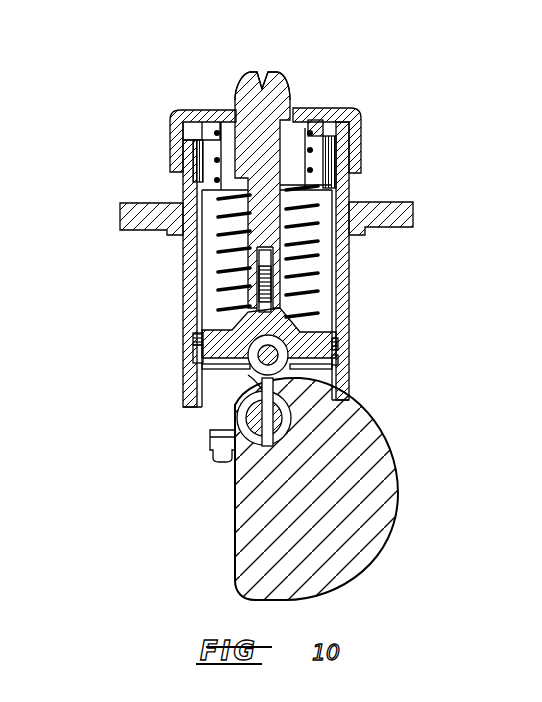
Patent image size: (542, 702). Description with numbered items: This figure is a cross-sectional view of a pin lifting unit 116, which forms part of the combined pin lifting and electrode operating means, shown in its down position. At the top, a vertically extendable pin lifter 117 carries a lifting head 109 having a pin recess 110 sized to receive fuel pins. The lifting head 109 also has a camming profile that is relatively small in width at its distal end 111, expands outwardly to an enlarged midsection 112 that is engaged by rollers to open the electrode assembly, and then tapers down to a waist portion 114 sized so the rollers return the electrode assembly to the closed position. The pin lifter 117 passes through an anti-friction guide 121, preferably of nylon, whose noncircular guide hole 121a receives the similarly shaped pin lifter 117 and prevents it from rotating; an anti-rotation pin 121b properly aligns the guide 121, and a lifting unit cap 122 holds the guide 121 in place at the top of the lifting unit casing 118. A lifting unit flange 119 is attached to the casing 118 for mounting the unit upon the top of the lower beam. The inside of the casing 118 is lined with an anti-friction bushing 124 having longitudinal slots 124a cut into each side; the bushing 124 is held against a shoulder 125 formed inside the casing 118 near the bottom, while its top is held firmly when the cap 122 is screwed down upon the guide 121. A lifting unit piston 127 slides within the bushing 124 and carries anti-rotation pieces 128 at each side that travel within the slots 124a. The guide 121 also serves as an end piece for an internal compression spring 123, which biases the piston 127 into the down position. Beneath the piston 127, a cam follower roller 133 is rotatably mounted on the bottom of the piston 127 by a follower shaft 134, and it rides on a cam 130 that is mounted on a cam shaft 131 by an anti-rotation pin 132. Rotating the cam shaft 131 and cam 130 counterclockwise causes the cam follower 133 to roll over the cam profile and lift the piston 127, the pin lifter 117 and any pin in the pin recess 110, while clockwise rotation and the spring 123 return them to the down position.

The lifting head 109 is at (239, 82).
The pin recess 110 is at (240, 80).
The distal end 111 is at (296, 69).
The enlarged midsection 112 is at (231, 104).
The waist portion 114 is at (298, 110).
The pin lifting unit 116 is at (118, 215).
The pin lifter 117 is at (257, 260).
The lifting unit casing 118 is at (188, 322).
The lifting unit flange 119 is at (394, 214).
The anti-friction guide 121 is at (334, 122).
The seal 121a is at (196, 187).
The anti-rotation pin 121b is at (320, 128).
The lifting unit cap 122 is at (345, 141).
The compression spring 123 is at (283, 190).
The anti-friction bushing 124 is at (318, 178).
The longitudinal slots 124a is at (200, 290).
The shoulder 125 is at (340, 380).
The lifting unit piston 127 is at (330, 331).
The anti-rotation pieces 128 is at (197, 347).
The cam 130 is at (372, 473).
The cam shaft 131 is at (225, 462).
The anti-rotation pin 132 is at (262, 418).
The cam follower roller 133 is at (252, 374).
The follower shaft 134 is at (232, 367).